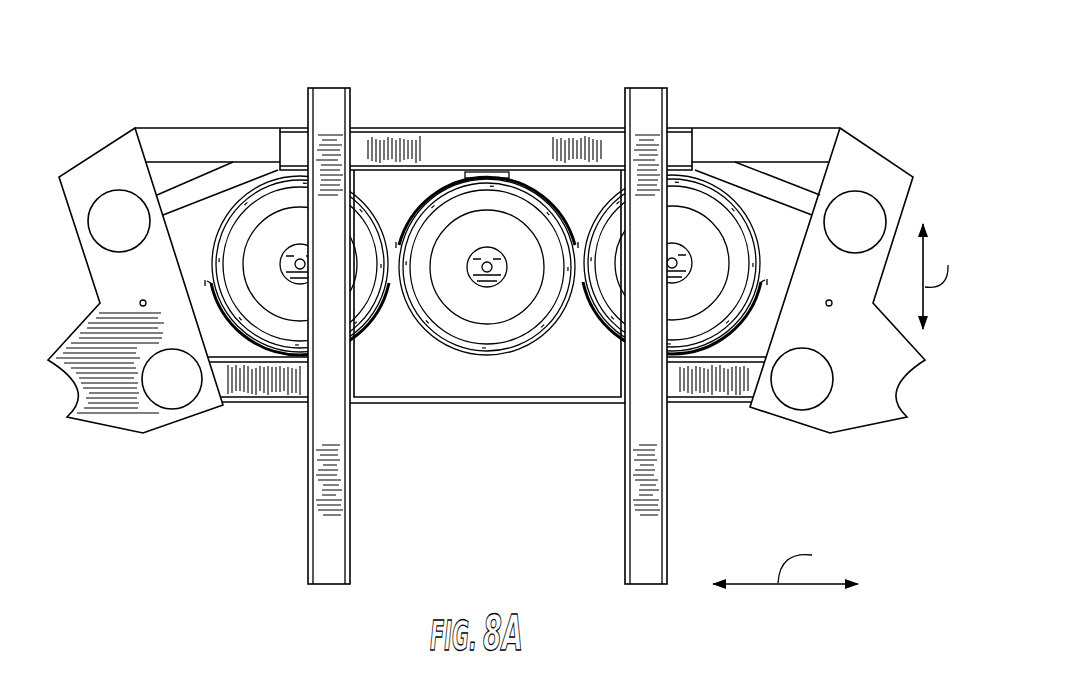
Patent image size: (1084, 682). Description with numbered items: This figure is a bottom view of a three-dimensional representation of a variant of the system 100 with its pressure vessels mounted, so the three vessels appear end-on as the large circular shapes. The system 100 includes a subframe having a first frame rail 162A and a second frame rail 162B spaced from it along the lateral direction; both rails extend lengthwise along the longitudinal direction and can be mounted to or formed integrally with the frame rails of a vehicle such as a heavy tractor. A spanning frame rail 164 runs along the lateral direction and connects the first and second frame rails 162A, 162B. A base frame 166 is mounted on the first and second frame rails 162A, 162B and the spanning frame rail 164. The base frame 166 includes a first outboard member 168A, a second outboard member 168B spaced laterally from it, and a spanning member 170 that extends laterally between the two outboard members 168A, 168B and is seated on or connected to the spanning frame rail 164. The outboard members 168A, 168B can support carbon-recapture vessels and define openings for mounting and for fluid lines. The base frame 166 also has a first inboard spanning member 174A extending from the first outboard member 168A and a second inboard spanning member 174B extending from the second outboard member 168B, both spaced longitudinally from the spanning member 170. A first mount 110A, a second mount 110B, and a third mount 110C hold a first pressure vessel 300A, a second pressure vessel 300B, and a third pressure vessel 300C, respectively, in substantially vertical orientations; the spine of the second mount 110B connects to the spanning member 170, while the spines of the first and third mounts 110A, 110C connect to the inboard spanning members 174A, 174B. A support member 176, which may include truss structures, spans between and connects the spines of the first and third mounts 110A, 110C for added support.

The system 100 is at (843, 52).
The first mount 110A is at (293, 415).
The second mount 110B is at (503, 110).
The third mount 110C is at (685, 418).
The first frame rail 162A is at (307, 540).
The second frame rail 162B is at (635, 538).
The spanning frame rail 164 is at (447, 145).
The base frame 166 is at (887, 452).
The first outboard member 168A is at (91, 180).
The second outboard member 168B is at (863, 382).
The spanning member 170 is at (237, 145).
The first inboard spanning member 174A is at (257, 392).
The second inboard spanning member 174B is at (702, 385).
The support member 176 is at (523, 405).
The first pressure vessel 300A is at (233, 230).
The second pressure vessel 300B is at (452, 335).
The third pressure vessel 300C is at (708, 193).